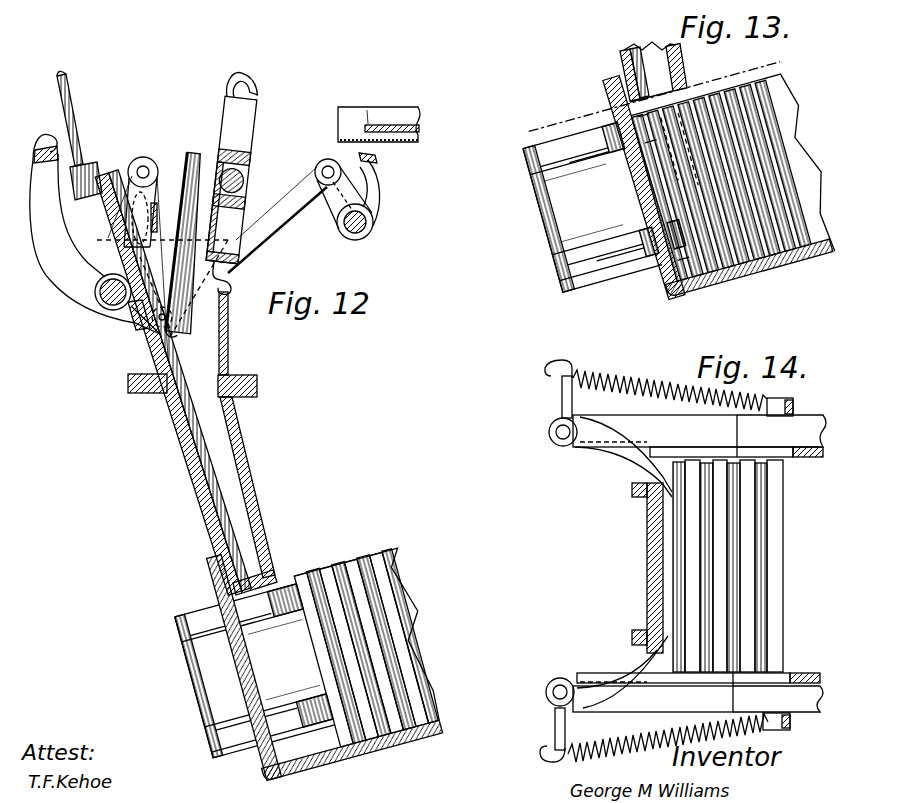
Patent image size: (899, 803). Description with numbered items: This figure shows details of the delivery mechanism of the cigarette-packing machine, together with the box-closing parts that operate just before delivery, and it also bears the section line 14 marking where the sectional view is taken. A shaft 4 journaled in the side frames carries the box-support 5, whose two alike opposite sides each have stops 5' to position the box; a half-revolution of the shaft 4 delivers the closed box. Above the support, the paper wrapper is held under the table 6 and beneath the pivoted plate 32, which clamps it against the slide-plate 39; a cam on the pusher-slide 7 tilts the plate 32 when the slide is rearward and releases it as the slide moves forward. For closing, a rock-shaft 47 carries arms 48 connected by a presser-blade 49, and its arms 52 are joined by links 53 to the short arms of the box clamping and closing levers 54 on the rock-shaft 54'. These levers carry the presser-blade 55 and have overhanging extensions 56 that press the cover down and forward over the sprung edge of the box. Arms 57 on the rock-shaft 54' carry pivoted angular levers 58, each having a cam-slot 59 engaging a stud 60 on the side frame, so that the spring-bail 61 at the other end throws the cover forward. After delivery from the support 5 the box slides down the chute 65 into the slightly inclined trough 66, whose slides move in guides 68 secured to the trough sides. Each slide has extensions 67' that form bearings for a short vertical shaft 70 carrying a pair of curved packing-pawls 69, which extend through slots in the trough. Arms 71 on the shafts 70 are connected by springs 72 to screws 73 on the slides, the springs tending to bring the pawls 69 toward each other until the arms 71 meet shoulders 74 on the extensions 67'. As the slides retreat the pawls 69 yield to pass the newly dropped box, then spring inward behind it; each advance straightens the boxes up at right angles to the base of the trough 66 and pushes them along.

In FIG. 12, the shaft 4 is at (244, 180).
In FIG. 12, the box-support 5 is at (231, 180).
In FIG. 12, the stops 5' is at (231, 175).
In FIG. 12, the table 6 is at (364, 107).
In FIG. 12, the pusher-slide 7 is at (420, 112).
In FIG. 13, the section line 14 is at (642, 103).
In FIG. 12, the pivoted plate 32 is at (420, 130).
In FIG. 12, the slide-plate 39 is at (403, 143).
In FIG. 12, the rock-shaft 47 is at (373, 224).
In FIG. 12, the arms 48 is at (380, 192).
In FIG. 12, the presser-blade 49 is at (377, 163).
In FIG. 12, the arms 52 is at (333, 204).
In FIG. 12, the links 53 is at (277, 220).
In FIG. 12, the box clamping and closing levers 54 is at (95, 247).
In FIG. 12, the rock-shaft 54' is at (113, 307).
In FIG. 12, the presser-blade 55 is at (47, 164).
In FIG. 12, the extensions 56 is at (55, 138).
In FIG. 12, the arms 57 is at (116, 241).
In FIG. 12, the angular levers 58 is at (140, 166).
In FIG. 12, the cam-slot 59 is at (158, 224).
In FIG. 12, the studs 60 is at (149, 200).
In FIG. 12, the spring-bail 61 is at (67, 90).
In FIG. 12, the chute 65 is at (188, 475).
In FIG. 13, the chute 65 is at (645, 171).
In FIG. 12, the trough 66 is at (380, 757).
In FIG. 13, the trough 66 is at (795, 118).
In FIG. 14, the trough 66 is at (805, 457).
In FIG. 12, the extensions 67' is at (284, 660).
In FIG. 13, the extensions 67' is at (583, 203).
In FIG. 14, the extensions 67' is at (655, 563).
In FIG. 14, the guides 68 is at (779, 563).
In FIG. 12, the packing-pawls 69 is at (254, 668).
In FIG. 13, the packing-pawls 69 is at (604, 197).
In FIG. 14, the packing-pawls 69 is at (640, 450).
In FIG. 12, the vertical shaft 70 is at (196, 612).
In FIG. 13, the vertical shaft 70 is at (575, 290).
In FIG. 14, the vertical shaft 70 is at (557, 437).
In FIG. 14, the arms 71 is at (562, 400).
In FIG. 14, the springs 72 is at (657, 371).
In FIG. 14, the screws 73 is at (793, 404).
In FIG. 14, the shoulders 74 is at (583, 417).